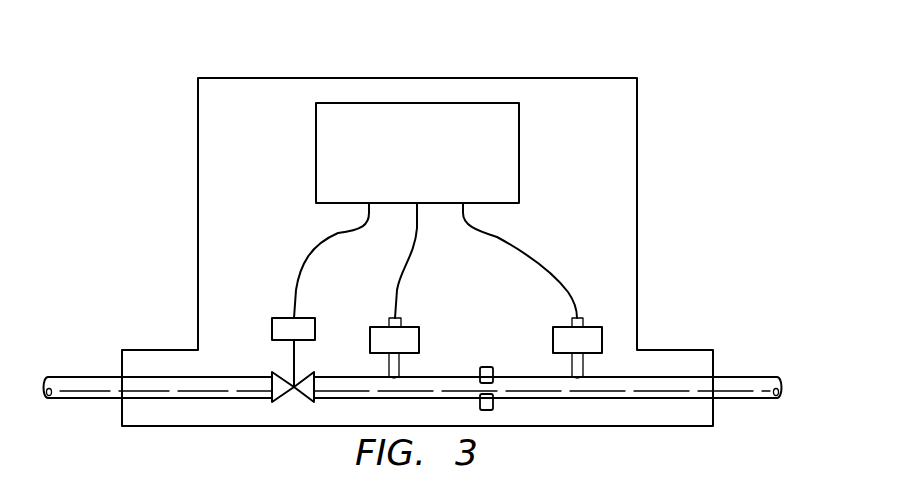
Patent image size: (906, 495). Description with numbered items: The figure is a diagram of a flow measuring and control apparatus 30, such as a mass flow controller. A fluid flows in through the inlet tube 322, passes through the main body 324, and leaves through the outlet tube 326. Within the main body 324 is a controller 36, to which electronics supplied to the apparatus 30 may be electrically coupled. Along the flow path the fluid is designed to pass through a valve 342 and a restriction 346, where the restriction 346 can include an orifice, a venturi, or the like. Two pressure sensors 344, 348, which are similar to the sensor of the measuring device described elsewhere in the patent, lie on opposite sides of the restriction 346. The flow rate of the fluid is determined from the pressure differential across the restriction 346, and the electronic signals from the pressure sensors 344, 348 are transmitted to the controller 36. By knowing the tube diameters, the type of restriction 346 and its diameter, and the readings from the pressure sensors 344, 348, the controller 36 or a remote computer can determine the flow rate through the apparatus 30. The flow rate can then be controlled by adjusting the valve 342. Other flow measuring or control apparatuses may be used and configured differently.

The flow measuring and control apparatus 30 is at (690, 115).
The main body 324 is at (650, 192).
The controller 36 is at (417, 153).
The inlet tube 322 is at (84, 376).
The outlet tube 326 is at (738, 377).
The valve 342 is at (282, 357).
The pressure sensor 344 is at (381, 326).
The restriction 346 is at (479, 366).
The pressure sensor 348 is at (594, 326).